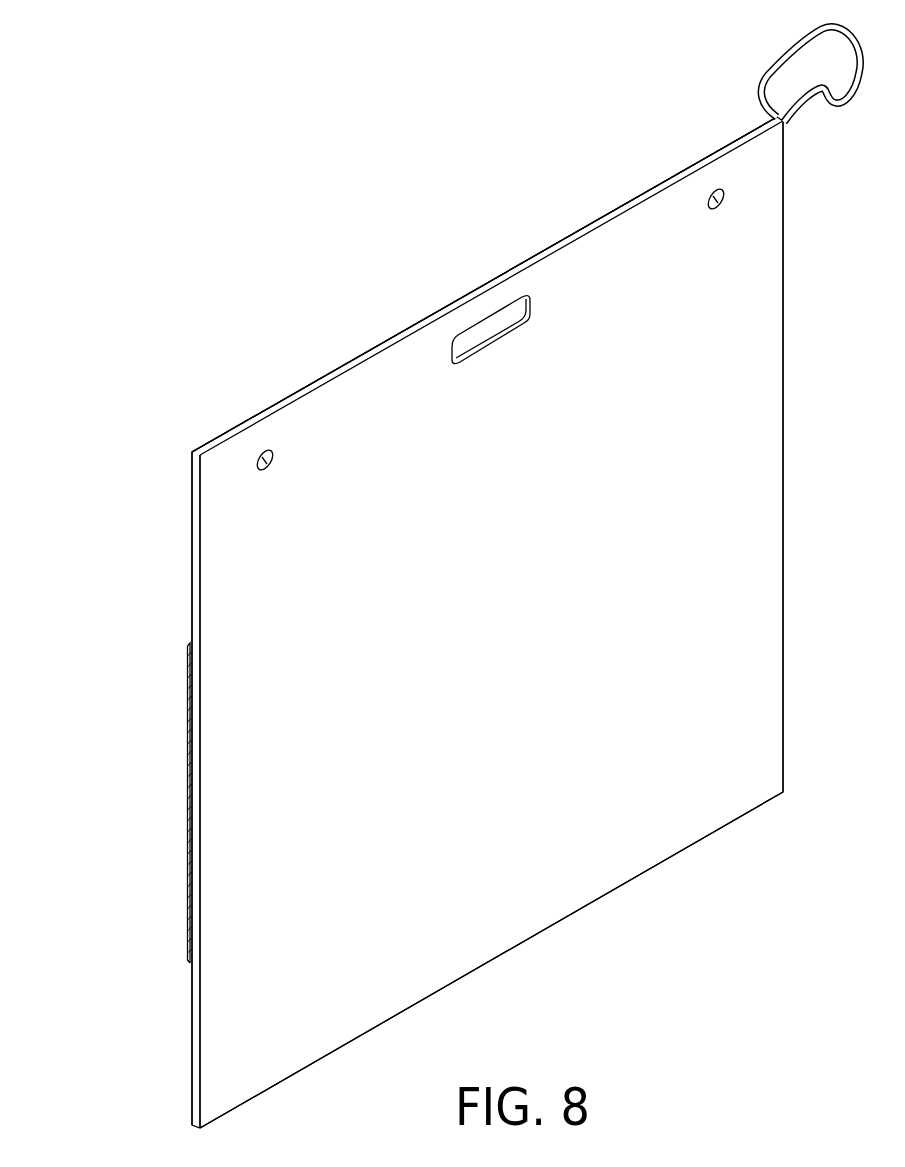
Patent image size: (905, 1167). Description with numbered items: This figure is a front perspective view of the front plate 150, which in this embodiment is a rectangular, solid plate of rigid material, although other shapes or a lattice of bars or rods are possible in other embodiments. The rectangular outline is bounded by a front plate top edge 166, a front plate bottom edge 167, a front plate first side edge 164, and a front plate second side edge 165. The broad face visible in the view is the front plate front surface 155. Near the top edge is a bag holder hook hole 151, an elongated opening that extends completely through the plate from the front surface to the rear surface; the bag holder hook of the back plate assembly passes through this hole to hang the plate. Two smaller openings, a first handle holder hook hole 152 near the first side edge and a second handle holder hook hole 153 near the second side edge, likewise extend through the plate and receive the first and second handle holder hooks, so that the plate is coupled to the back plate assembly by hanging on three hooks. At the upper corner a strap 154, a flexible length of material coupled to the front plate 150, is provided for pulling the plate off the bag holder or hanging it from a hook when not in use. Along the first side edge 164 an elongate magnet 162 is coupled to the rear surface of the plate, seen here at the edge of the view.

The front plate 150 is at (412, 195).
The bag holder hook hole 151 is at (503, 318).
The first handle holder hook hole 152 is at (269, 470).
The second handle holder hook hole 153 is at (716, 211).
The strap 154 is at (797, 53).
The front plate front surface 155 is at (526, 659).
The magnet 162 is at (187, 690).
The front plate first side edge 164 is at (197, 605).
The front plate second side edge 165 is at (784, 482).
The front plate top edge 166 is at (335, 371).
The front plate bottom edge 167 is at (574, 913).